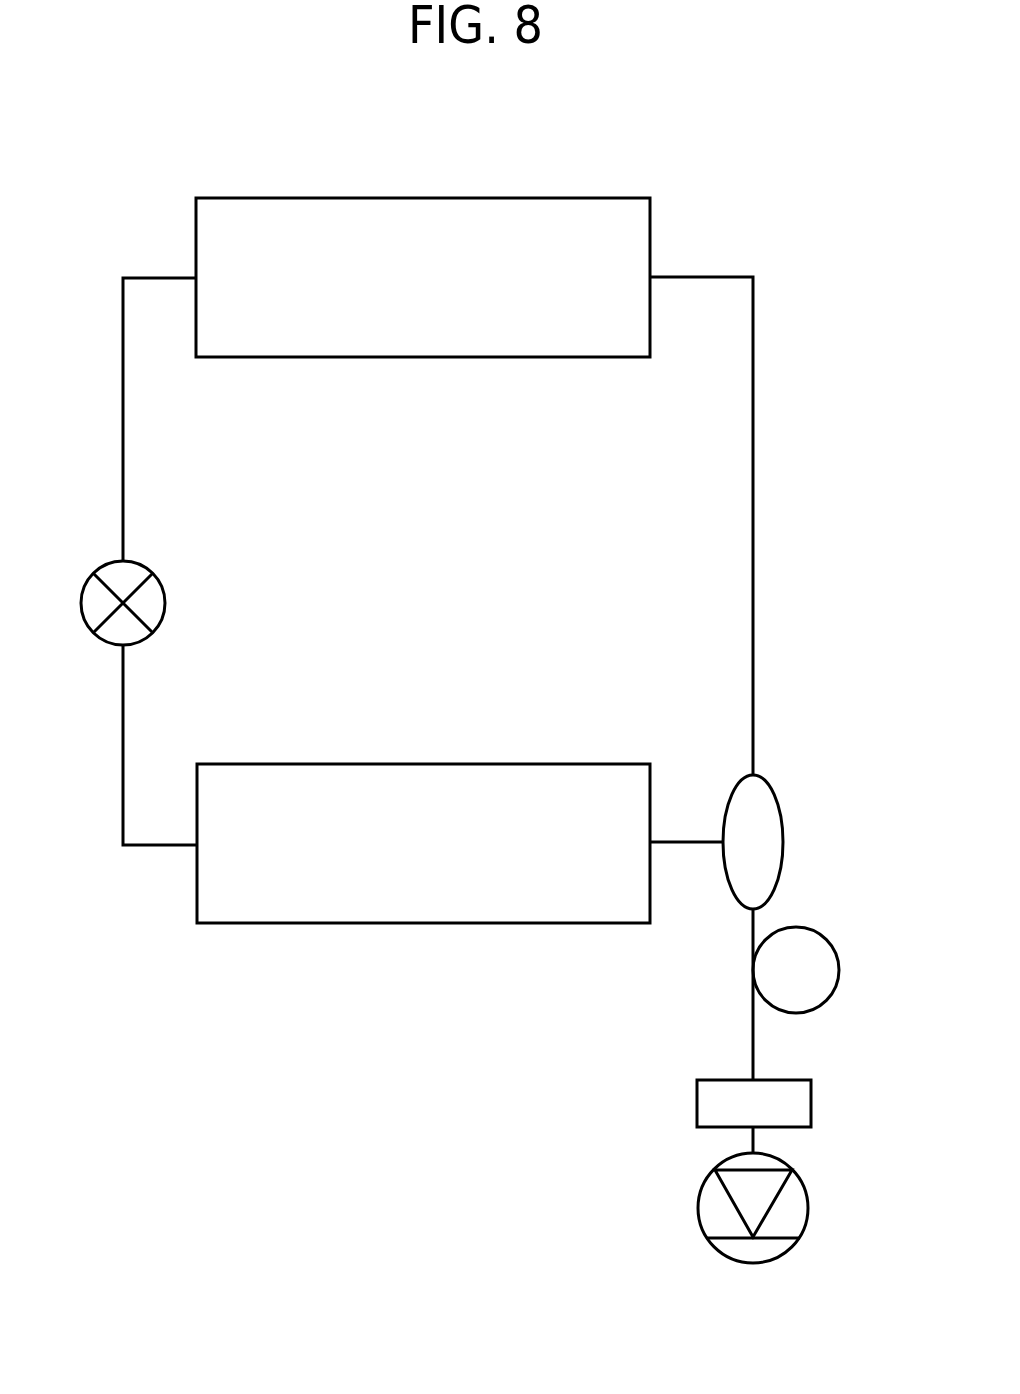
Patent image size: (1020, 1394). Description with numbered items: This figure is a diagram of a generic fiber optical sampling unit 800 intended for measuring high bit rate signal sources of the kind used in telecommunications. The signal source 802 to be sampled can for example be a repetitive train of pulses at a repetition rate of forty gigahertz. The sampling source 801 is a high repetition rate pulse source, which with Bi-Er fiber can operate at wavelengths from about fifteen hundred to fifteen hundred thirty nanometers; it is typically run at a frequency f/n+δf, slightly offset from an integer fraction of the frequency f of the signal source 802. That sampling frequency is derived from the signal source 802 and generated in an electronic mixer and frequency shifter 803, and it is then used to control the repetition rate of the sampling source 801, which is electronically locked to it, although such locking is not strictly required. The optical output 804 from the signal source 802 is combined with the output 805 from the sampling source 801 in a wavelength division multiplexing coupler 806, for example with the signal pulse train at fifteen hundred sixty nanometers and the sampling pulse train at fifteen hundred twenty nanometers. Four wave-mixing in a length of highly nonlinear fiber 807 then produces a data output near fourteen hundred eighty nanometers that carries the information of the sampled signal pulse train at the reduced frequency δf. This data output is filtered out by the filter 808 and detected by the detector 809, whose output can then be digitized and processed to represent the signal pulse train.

The optical sampling unit 800 is at (197, 158).
The sampling source 801 is at (570, 763).
The signal source 802 is at (565, 198).
The electronic mixer and frequency shifter 803 is at (100, 568).
The optical output 804 is at (698, 277).
The output 805 is at (678, 842).
The wavelength division multiplexing coupler 806 is at (778, 797).
The highly nonlinear fiber 807 is at (815, 930).
The filter 808 is at (697, 1082).
The detector 809 is at (808, 1190).